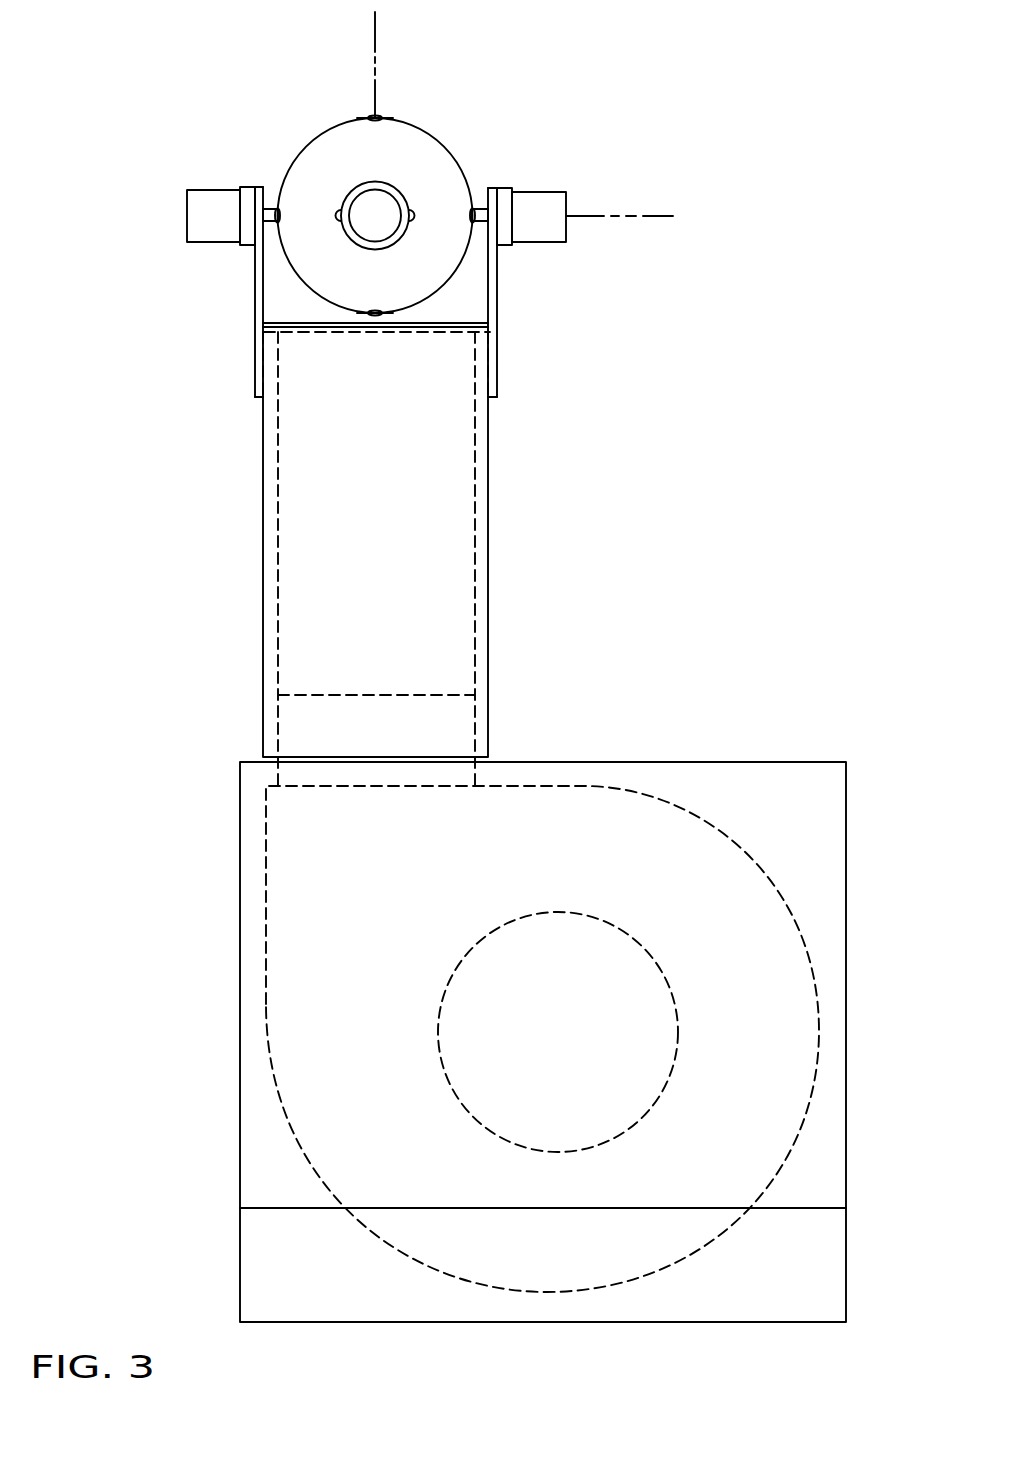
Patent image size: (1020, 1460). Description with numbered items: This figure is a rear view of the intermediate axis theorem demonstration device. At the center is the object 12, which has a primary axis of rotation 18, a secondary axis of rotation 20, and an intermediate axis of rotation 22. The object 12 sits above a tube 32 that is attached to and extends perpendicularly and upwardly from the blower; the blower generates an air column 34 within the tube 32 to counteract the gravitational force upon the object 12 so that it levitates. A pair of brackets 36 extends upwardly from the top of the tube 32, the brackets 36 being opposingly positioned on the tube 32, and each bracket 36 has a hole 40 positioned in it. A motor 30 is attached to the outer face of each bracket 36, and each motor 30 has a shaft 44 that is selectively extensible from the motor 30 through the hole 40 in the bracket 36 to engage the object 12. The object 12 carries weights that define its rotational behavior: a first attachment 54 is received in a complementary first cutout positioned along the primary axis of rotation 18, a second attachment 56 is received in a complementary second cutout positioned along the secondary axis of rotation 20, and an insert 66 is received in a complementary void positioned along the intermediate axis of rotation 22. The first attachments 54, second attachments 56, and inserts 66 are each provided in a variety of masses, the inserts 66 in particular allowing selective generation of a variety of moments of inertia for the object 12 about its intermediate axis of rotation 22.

The object 12 is at (432, 132).
The primary axis of rotation 18 is at (373, 218).
The secondary axis of rotation 20 is at (378, 80).
The intermediate axis of rotation 22 is at (655, 216).
The motor 30 is at (192, 235).
The tube 32 is at (263, 548).
The air column 34 is at (407, 490).
The bracket 36 is at (500, 302).
The hole 40 is at (493, 218).
The shaft 44 is at (271, 210).
The first attachment 54 is at (398, 193).
The second attachment 56 is at (355, 117).
The insert 66 is at (473, 245).